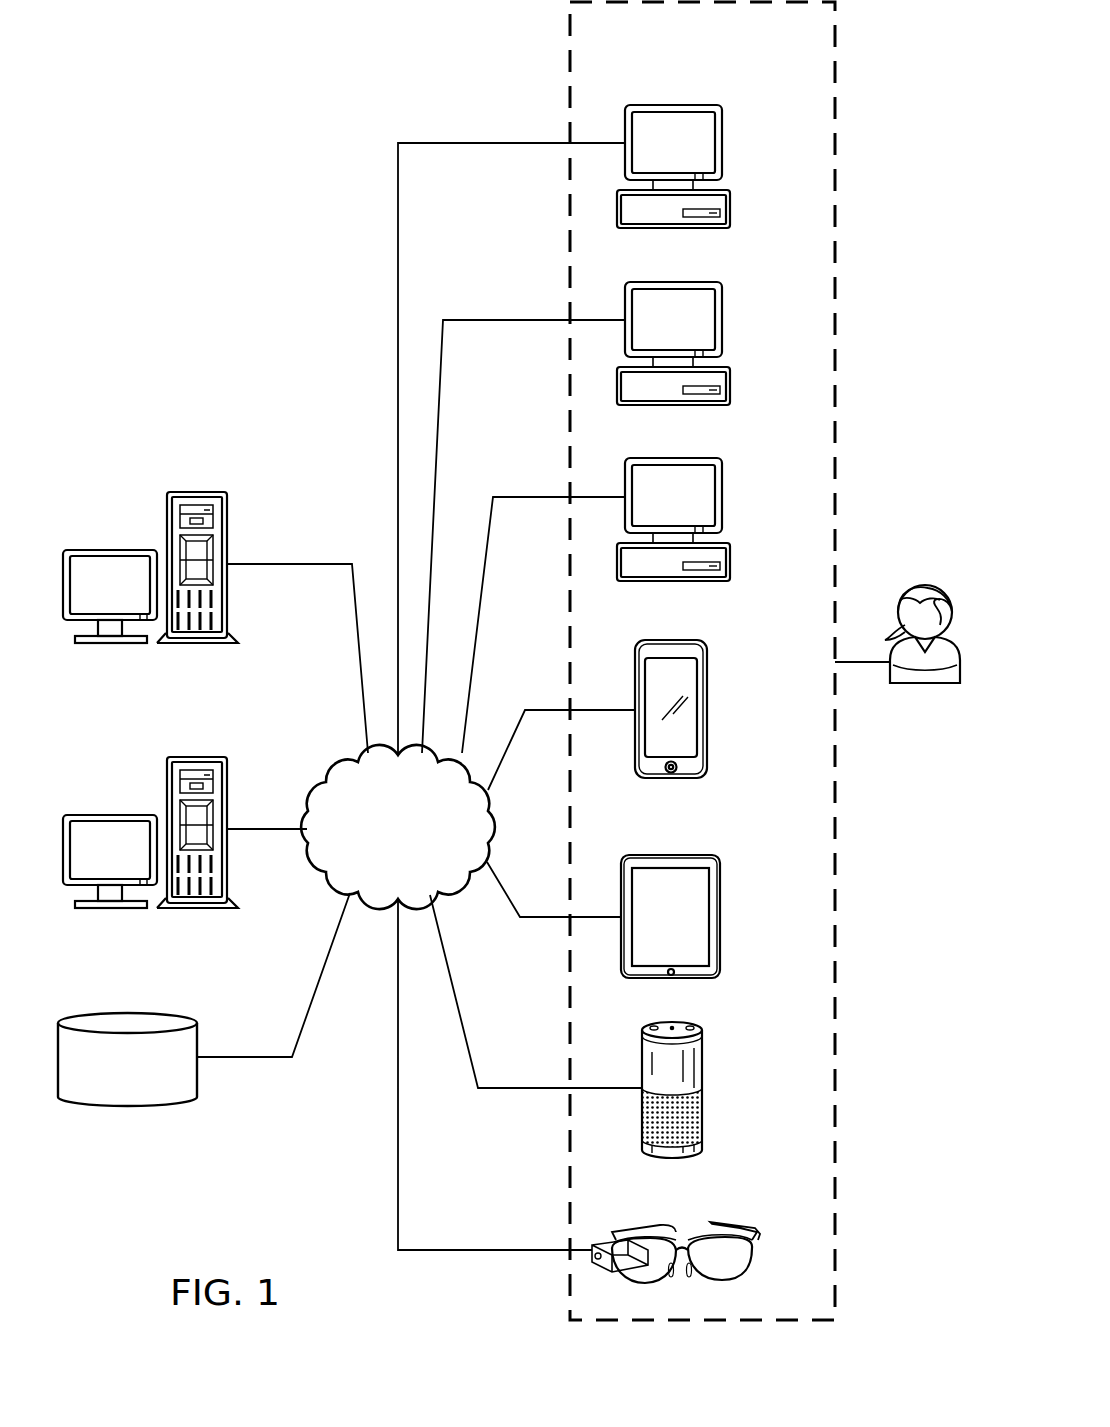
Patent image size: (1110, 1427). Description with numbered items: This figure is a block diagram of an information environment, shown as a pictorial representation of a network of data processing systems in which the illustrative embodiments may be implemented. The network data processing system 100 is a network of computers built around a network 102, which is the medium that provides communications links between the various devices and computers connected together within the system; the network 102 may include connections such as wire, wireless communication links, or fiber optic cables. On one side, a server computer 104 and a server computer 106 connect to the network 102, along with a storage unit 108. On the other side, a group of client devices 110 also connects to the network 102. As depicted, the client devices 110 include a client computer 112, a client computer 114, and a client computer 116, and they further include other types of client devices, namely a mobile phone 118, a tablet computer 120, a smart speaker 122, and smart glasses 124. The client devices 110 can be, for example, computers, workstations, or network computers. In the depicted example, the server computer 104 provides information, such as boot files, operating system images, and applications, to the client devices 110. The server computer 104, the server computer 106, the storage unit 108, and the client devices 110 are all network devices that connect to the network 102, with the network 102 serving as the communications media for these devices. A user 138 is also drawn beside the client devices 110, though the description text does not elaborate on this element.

The network data processing system 100 is at (229, 54).
The network 102 is at (420, 862).
The server computer 104 is at (110, 550).
The server computer 106 is at (110, 815).
The storage unit 108 is at (125, 1106).
The client devices 110 is at (724, 80).
The client computer 112 is at (722, 135).
The client computer 114 is at (722, 312).
The client computer 116 is at (722, 488).
The mobile phone 118 is at (707, 733).
The tablet computer 120 is at (720, 915).
The smart speaker 122 is at (703, 1068).
The smart glasses 124 is at (757, 1238).
The user 138 is at (928, 584).